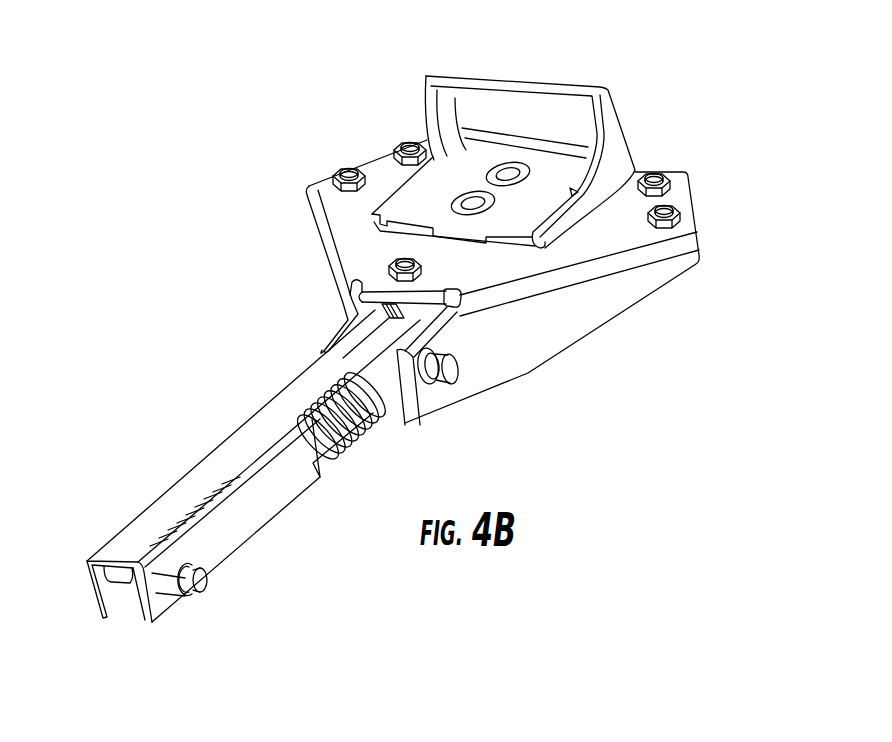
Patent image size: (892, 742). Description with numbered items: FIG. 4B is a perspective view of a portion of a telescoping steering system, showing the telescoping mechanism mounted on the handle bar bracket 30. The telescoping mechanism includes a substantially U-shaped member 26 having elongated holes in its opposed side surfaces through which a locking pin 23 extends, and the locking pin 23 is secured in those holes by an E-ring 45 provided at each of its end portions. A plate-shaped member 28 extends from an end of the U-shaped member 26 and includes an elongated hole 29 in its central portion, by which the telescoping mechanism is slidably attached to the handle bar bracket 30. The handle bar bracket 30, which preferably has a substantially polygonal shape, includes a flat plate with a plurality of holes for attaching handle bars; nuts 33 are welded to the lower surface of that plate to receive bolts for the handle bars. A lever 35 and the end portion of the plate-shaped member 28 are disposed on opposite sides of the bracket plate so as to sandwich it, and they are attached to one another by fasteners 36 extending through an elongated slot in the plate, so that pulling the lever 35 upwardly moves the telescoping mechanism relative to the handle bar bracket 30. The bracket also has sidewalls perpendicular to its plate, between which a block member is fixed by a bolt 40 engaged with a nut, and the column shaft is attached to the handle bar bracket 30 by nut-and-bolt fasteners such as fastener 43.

The locking pin 23 is at (207, 587).
The substantially U-shaped member 26 is at (267, 500).
The plate-shaped member 28 is at (263, 418).
The elongated hole 29 is at (387, 312).
The handle bar bracket 30 is at (583, 320).
The nuts 33 is at (352, 166).
The lever 35 is at (540, 93).
The fasteners 36 is at (495, 211).
The bolt 40 is at (453, 378).
The fastener 43 is at (393, 265).
The E-ring 45 is at (185, 597).